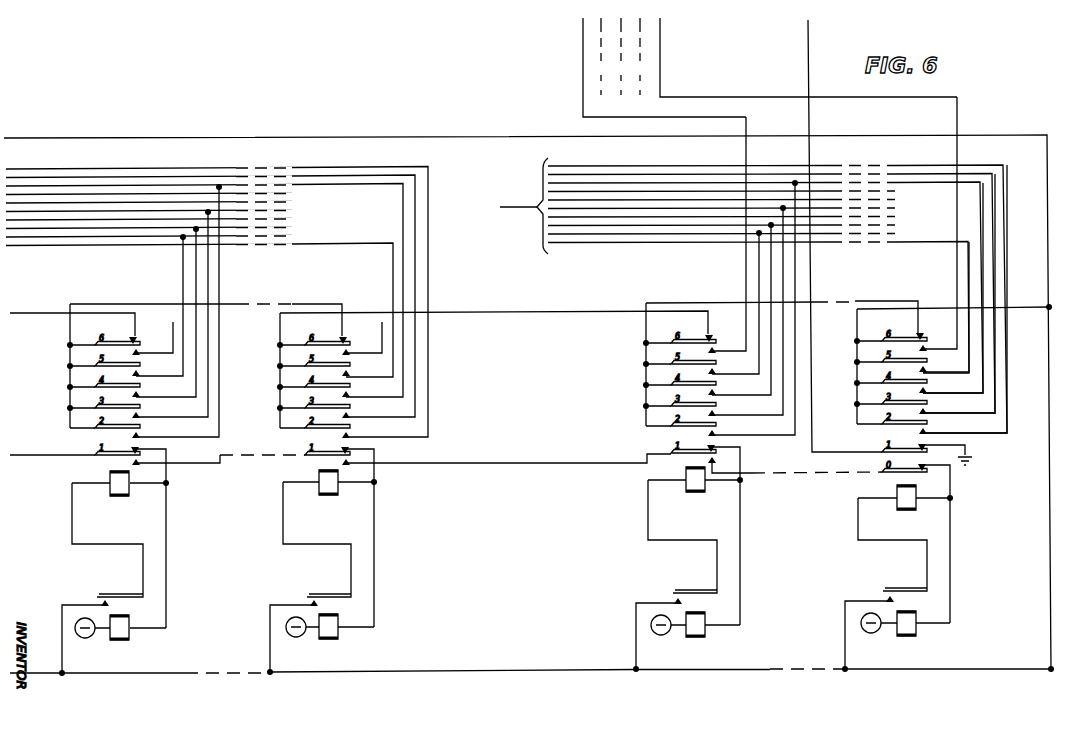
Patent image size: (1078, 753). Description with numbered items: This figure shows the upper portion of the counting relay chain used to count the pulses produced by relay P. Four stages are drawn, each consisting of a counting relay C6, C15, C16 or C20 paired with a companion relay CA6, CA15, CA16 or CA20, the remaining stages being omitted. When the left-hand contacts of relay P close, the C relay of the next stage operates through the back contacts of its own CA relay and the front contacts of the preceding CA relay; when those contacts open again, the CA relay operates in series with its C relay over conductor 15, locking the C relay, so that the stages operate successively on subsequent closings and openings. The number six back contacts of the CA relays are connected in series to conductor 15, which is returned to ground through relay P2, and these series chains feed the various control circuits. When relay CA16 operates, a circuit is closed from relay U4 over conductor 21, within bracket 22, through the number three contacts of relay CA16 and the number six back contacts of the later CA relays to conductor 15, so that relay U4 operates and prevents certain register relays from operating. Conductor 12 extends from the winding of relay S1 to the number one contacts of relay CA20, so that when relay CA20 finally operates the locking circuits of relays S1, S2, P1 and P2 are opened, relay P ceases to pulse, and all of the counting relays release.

The conductor 12 is at (809, 47).
The conductor 15 is at (375, 137).
The conductor 21 is at (604, 208).
The bracket 22 is at (521, 206).
The counting relay CA6 is at (123, 495).
The counting relay CA15 is at (332, 494).
The counting relay CA16 is at (698, 491).
The counting relay CA20 is at (909, 509).
The counting relay C6 is at (122, 639).
The counting relay C15 is at (331, 638).
The counting relay C16 is at (700, 636).
The counting relay C20 is at (910, 634).